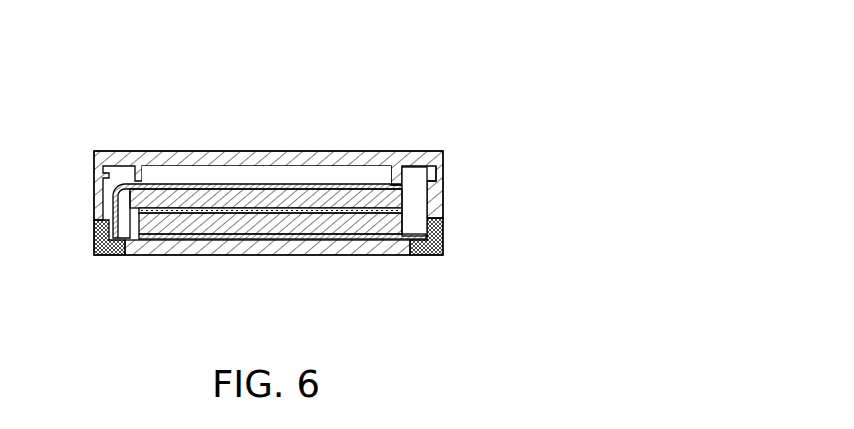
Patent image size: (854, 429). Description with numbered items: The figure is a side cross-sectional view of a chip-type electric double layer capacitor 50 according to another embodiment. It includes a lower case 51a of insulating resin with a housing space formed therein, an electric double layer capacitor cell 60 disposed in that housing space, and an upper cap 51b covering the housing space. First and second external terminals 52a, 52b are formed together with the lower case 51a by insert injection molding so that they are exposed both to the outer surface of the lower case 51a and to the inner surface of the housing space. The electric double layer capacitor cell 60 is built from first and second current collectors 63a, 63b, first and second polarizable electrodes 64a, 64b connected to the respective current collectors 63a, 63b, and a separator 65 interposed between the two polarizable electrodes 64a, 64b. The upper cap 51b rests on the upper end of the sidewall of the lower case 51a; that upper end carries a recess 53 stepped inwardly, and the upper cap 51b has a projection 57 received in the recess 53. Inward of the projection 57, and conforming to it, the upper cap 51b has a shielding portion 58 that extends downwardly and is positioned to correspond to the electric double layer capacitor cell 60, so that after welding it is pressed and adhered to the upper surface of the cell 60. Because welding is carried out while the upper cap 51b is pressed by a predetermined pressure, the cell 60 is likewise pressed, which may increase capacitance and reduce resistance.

The chip-type electric double layer capacitor 50 is at (478, 50).
The lower case 51a is at (441, 213).
The upper cap 51b is at (442, 161).
The first external terminal 52a is at (112, 256).
The second external terminal 52b is at (430, 256).
The recess 53 is at (441, 191).
The projection 57 is at (432, 173).
The shielding portion 58 is at (392, 172).
The electric double layer capacitor cell 60 is at (258, 177).
The first current collector 63a is at (106, 223).
The second current collector 63b is at (365, 236).
The first polarizable electrode 64a is at (130, 195).
The second polarizable electrode 64b is at (292, 224).
The separator 65 is at (218, 210).